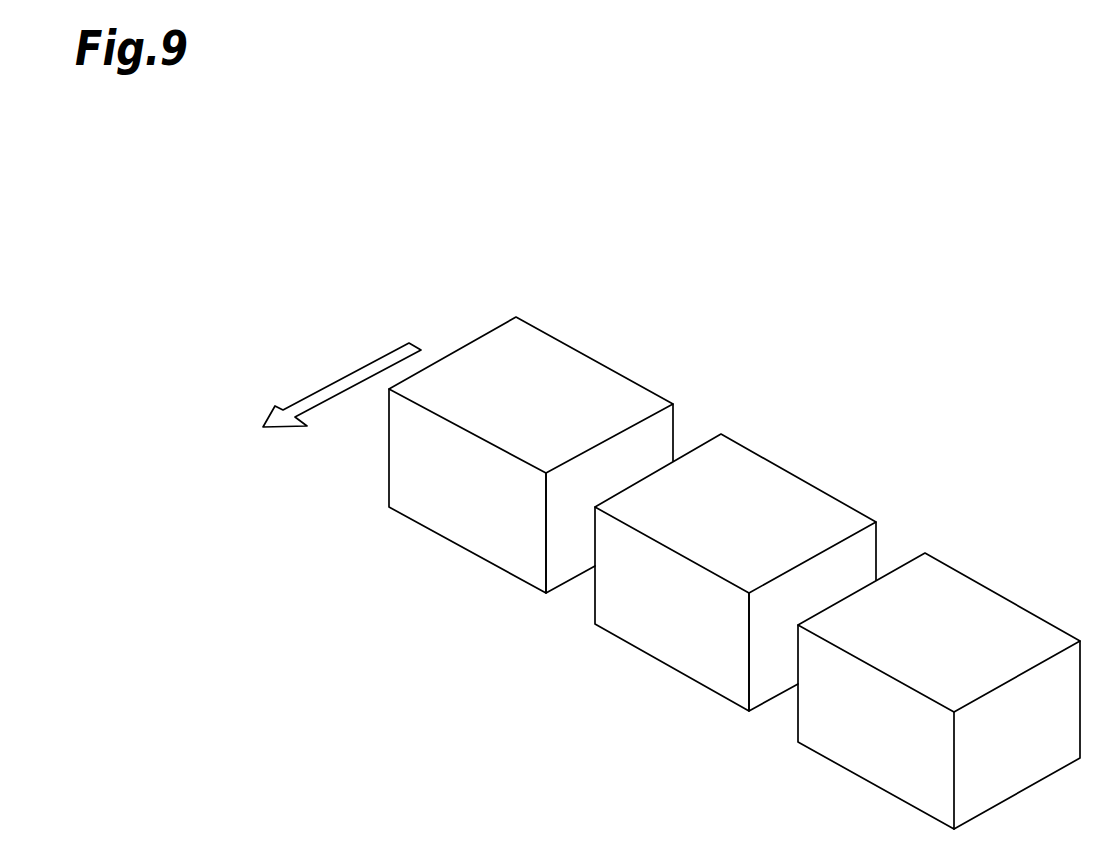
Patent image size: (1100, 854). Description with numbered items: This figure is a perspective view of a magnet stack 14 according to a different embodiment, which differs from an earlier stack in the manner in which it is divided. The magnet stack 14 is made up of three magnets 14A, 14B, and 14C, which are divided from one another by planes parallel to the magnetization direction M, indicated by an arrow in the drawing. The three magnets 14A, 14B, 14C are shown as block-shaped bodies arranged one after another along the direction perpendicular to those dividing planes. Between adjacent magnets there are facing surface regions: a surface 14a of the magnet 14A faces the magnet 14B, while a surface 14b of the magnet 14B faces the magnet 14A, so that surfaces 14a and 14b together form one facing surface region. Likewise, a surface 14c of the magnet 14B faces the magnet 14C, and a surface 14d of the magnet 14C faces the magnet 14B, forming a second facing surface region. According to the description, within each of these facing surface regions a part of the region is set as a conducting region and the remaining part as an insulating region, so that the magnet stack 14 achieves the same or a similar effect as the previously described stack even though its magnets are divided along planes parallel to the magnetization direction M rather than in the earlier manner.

The magnet stack 14 is at (474, 234).
The magnet 14A is at (580, 372).
The magnet 14B is at (790, 488).
The magnet 14C is at (1000, 608).
The surface 14a is at (554, 571).
The surface 14b is at (610, 593).
The surface 14c is at (759, 692).
The surface 14d is at (815, 713).
The magnetization direction M is at (347, 372).